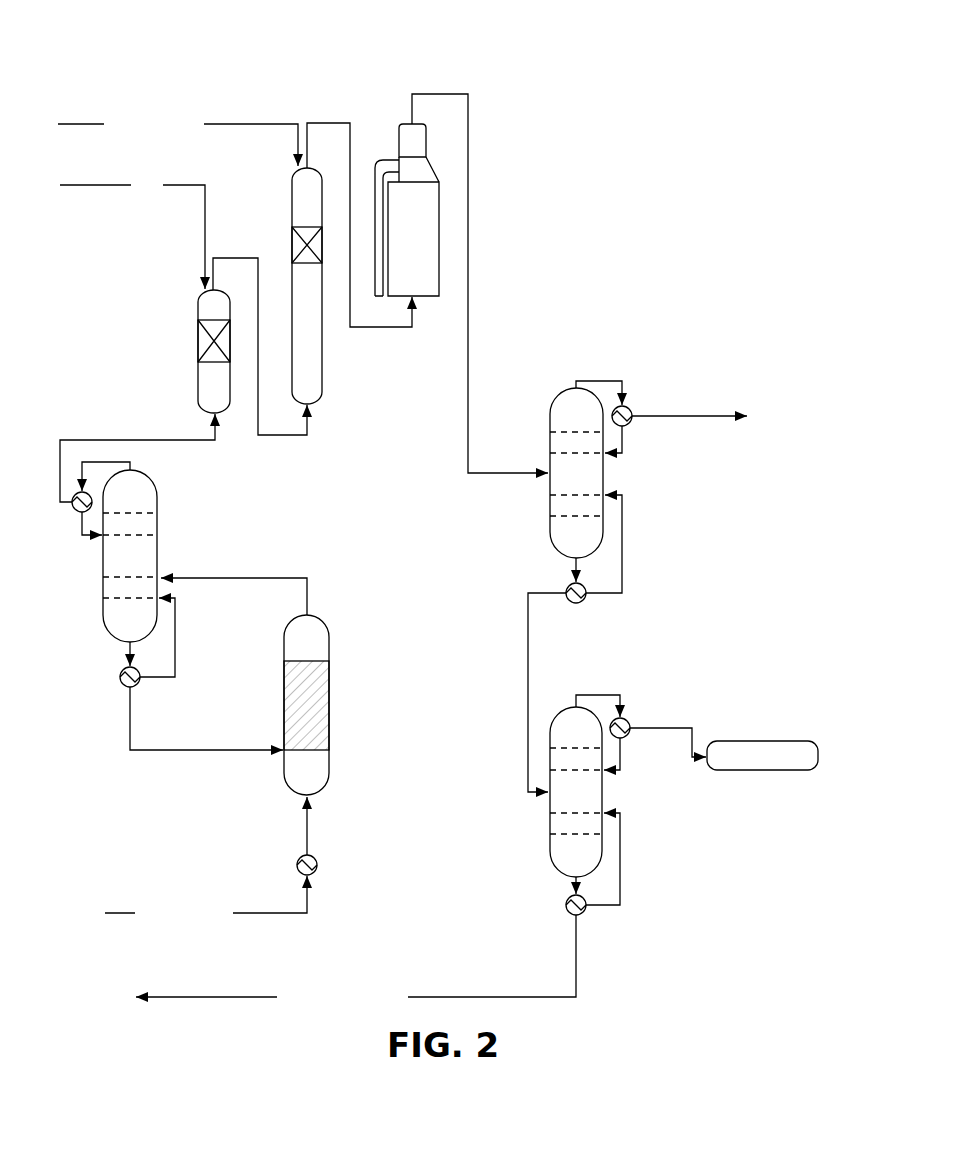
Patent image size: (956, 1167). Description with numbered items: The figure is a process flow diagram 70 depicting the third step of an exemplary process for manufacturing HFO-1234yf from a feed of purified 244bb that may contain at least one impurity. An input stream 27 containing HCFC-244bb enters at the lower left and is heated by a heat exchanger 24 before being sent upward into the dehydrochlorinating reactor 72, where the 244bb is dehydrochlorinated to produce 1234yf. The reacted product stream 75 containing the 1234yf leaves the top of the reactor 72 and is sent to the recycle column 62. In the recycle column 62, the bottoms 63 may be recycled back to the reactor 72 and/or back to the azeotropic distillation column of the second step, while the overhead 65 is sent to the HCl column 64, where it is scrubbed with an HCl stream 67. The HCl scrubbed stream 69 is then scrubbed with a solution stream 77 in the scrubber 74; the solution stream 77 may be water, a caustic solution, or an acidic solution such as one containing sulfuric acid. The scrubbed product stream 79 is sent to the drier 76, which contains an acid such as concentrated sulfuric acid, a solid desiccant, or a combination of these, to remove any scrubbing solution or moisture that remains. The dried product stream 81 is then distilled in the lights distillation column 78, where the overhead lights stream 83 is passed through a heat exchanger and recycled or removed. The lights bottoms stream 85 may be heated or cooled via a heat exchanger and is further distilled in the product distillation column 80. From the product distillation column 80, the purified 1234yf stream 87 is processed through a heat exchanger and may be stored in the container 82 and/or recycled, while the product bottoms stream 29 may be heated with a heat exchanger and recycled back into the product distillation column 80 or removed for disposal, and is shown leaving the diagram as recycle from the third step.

The process flow diagram 70 is at (208, 58).
The solution stream 77 is at (232, 124).
The HCl stream 67 is at (107, 185).
The drier 76 is at (392, 148).
The scrubbed product stream 79 is at (400, 327).
The HCl column 64 is at (185, 350).
The overhead 65 is at (125, 440).
The HCl scrubbed stream 69 is at (290, 436).
The scrubber 74 is at (333, 389).
The recycle column 62 is at (163, 513).
The bottoms 63 is at (210, 750).
The reacted product stream 75 is at (295, 578).
The dehydrochlorinating reactor 72 is at (337, 733).
The heat exchanger 24 is at (317, 868).
The input stream 27 is at (265, 913).
The dried product stream 81 is at (512, 473).
The lights distillation column 78 is at (548, 385).
The overhead lights stream 83 is at (672, 416).
The lights bottoms stream 85 is at (538, 593).
The product distillation column 80 is at (545, 843).
The purified 1234yf stream 87 is at (672, 728).
The container 82 is at (752, 738).
The product bottoms stream 29 is at (497, 997).